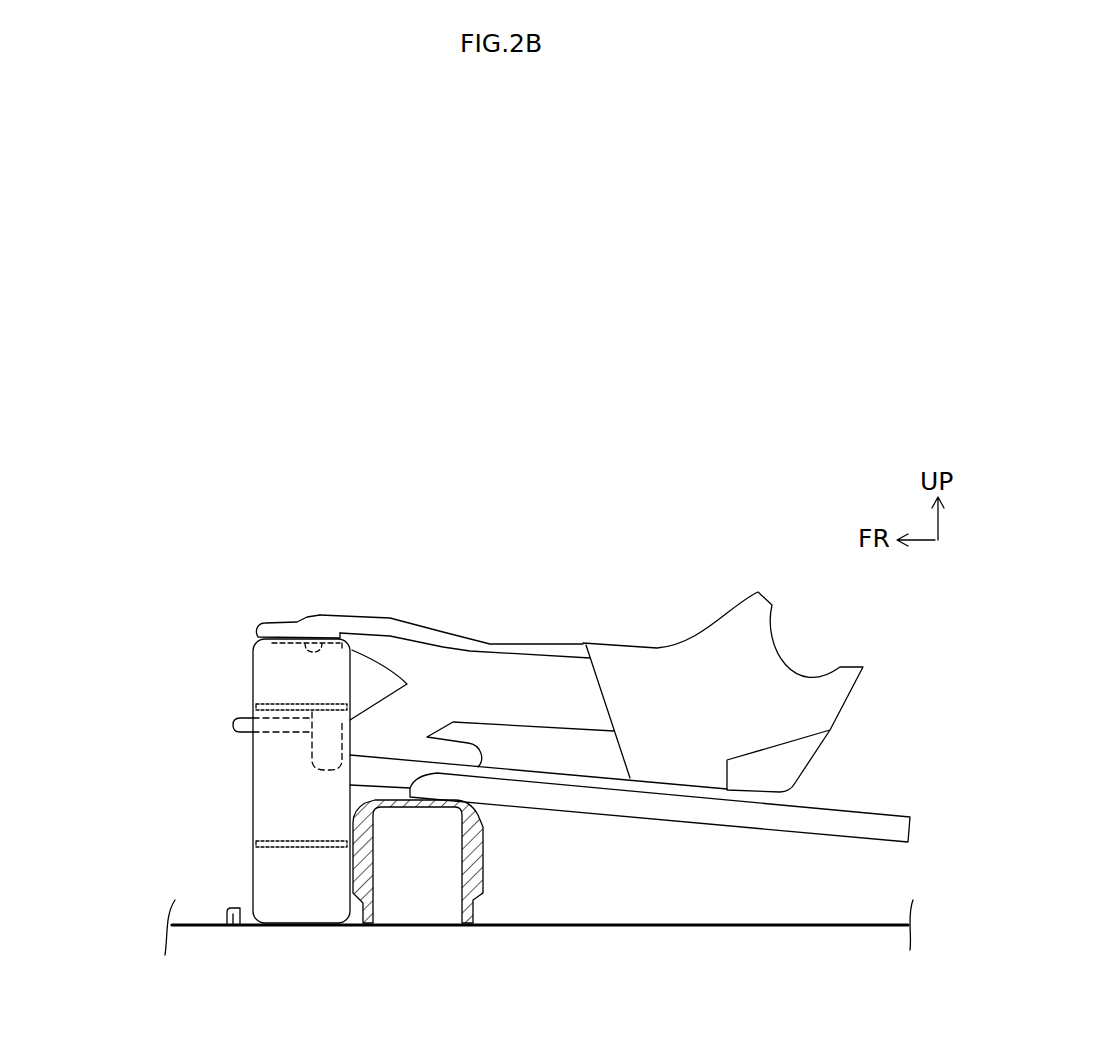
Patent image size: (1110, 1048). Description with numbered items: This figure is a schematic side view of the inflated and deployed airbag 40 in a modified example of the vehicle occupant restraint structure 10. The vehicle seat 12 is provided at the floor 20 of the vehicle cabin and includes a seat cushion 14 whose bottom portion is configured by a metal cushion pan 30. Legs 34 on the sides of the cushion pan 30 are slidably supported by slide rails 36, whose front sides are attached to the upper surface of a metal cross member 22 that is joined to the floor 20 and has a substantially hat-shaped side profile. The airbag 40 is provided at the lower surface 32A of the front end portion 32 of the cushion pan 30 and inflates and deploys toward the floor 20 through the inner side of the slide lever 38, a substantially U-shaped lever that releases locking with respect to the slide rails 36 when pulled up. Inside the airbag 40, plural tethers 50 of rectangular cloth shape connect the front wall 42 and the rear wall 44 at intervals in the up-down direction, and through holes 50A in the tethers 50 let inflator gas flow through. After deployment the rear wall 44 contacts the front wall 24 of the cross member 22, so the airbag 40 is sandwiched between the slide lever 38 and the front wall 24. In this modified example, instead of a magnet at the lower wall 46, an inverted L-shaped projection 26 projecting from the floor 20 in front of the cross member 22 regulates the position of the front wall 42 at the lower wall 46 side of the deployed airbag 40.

The vehicle occupant restraint structure 10 is at (164, 896).
The vehicle seat 12 is at (721, 560).
The seat cushion 14 is at (462, 598).
The floor 20 is at (708, 925).
The cross member 22 is at (497, 851).
The front wall 24 is at (350, 878).
The projection 26 is at (229, 906).
The cushion pan 30 is at (400, 601).
The front end portion 32 is at (271, 610).
The lower surface 32A is at (320, 641).
The legs 34 is at (558, 688).
The slide rails 36 is at (665, 812).
The slide lever 38 is at (240, 724).
The airbag 40 is at (247, 635).
The front wall 42 is at (253, 773).
The rear wall 44 is at (357, 683).
The lower wall 46 is at (290, 926).
The tethers 50 is at (295, 692).
The through holes 50A is at (286, 703).